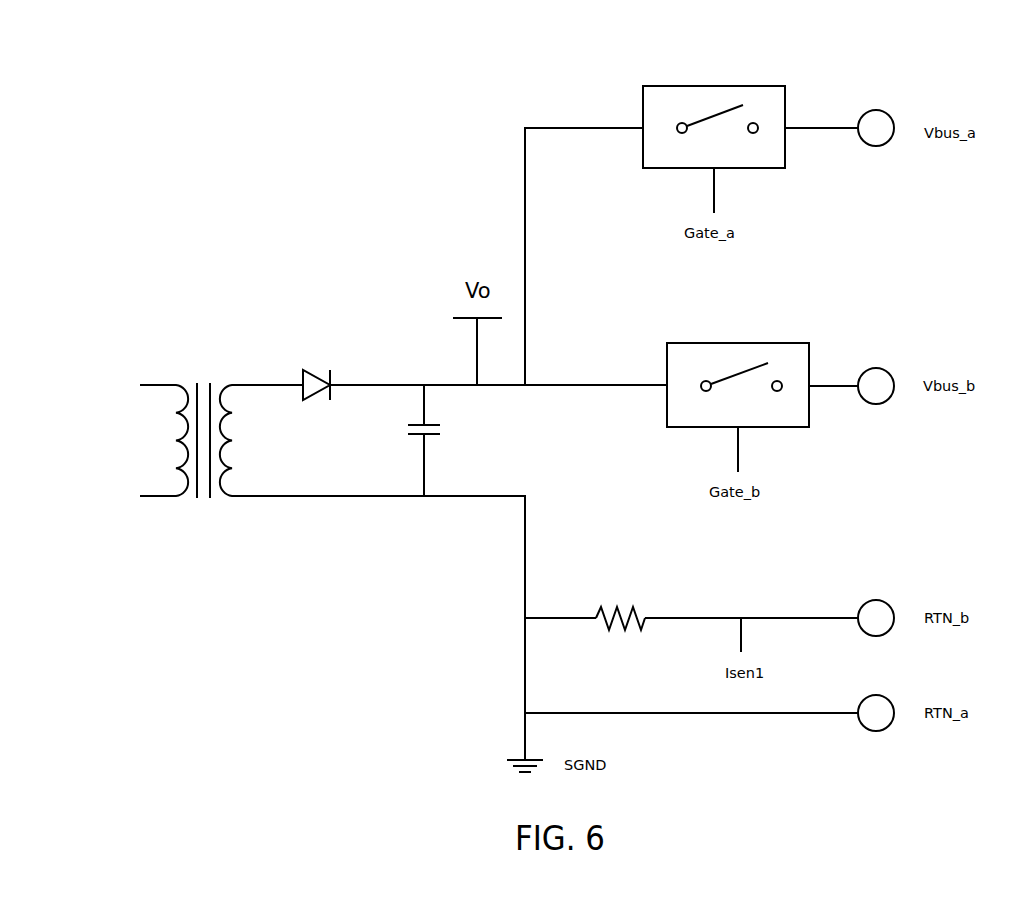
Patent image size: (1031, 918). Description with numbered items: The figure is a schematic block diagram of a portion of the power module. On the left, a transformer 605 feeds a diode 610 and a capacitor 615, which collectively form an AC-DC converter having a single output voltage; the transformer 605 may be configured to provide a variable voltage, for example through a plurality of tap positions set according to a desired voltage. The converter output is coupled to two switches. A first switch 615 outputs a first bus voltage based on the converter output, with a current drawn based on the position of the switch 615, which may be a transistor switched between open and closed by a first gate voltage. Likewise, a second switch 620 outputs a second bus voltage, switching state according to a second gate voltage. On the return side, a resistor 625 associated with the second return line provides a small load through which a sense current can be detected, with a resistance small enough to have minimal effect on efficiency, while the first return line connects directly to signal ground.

The transformer 605 is at (199, 369).
The diode 610 is at (300, 339).
The capacitor 615 is at (382, 458).
The switch 620 is at (721, 333).
The resistor 625 is at (622, 599).